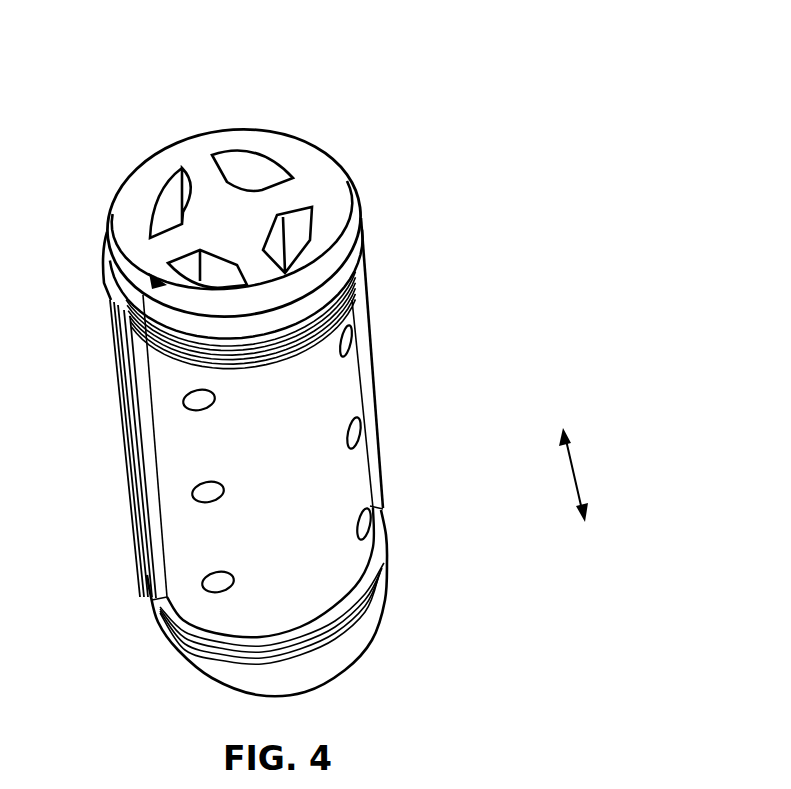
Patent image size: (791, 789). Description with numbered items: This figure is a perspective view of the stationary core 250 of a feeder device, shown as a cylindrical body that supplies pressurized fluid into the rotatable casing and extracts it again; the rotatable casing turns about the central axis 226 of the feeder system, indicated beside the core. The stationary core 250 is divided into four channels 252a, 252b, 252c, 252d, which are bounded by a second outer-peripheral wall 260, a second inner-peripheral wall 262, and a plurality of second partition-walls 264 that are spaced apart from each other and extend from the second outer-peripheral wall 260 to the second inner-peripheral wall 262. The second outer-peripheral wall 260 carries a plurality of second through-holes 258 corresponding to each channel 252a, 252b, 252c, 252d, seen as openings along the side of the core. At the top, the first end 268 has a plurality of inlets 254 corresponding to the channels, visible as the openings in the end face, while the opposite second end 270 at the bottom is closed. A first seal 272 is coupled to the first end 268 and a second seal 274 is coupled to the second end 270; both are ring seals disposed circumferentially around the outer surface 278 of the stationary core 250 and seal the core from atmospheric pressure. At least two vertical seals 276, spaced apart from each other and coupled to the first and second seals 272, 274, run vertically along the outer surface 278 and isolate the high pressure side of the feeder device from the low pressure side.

The stationary core 250 is at (110, 72).
The channel 252a is at (250, 172).
The channel 252b is at (167, 198).
The channel 252c is at (180, 267).
The channel 252d is at (307, 217).
The inlets 254 is at (252, 198).
The second through-holes 258 is at (220, 407).
The second outer-peripheral wall 260 is at (147, 280).
The second inner-peripheral wall 262 is at (272, 172).
The second partition-walls 264 is at (293, 197).
The first end 268 is at (157, 160).
The second end 270 is at (194, 685).
The first seal 272 is at (147, 348).
The second seal 274 is at (162, 641).
The vertical seals 276 is at (150, 493).
The outer surface 278 is at (160, 443).
The central axis 226 is at (580, 470).